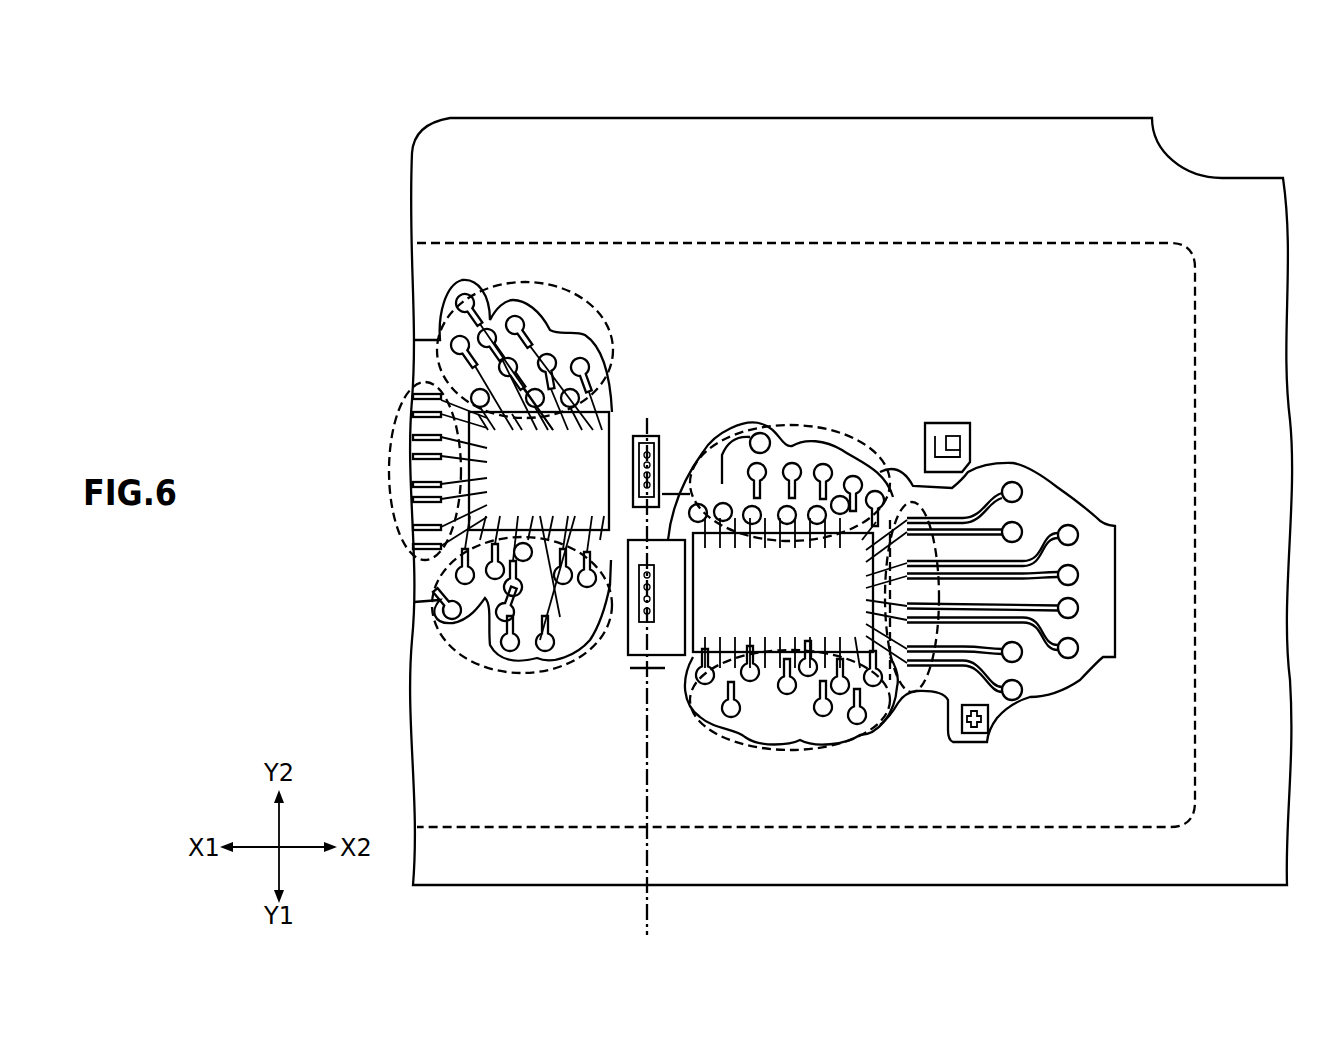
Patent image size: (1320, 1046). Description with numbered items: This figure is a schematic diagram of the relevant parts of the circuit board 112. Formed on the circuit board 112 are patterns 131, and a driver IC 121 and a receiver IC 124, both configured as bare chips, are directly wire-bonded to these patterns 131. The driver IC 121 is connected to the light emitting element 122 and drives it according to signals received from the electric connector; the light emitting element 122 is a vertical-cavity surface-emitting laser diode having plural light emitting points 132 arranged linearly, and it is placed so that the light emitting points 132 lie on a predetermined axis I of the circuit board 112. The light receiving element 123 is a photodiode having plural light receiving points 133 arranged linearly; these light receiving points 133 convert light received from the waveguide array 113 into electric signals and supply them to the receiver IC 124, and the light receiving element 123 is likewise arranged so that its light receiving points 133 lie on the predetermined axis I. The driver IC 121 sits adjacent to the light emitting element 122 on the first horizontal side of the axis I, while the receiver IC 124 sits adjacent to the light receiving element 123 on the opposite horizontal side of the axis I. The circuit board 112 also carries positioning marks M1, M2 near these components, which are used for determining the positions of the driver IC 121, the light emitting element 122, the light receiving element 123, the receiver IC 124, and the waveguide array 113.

The circuit board 112 is at (900, 115).
The waveguide array 113 is at (1198, 468).
The driver IC 121 is at (573, 482).
The light emitting element 122 is at (717, 445).
The light receiving element 123 is at (623, 708).
The receiver IC 124 is at (802, 503).
The patterns 131 is at (707, 537).
The light emitting points 132 is at (647, 482).
The light receiving points 133 is at (647, 580).
The positioning mark M1 is at (975, 765).
The positioning mark M2 is at (947, 405).
The predetermined axis I is at (675, 676).